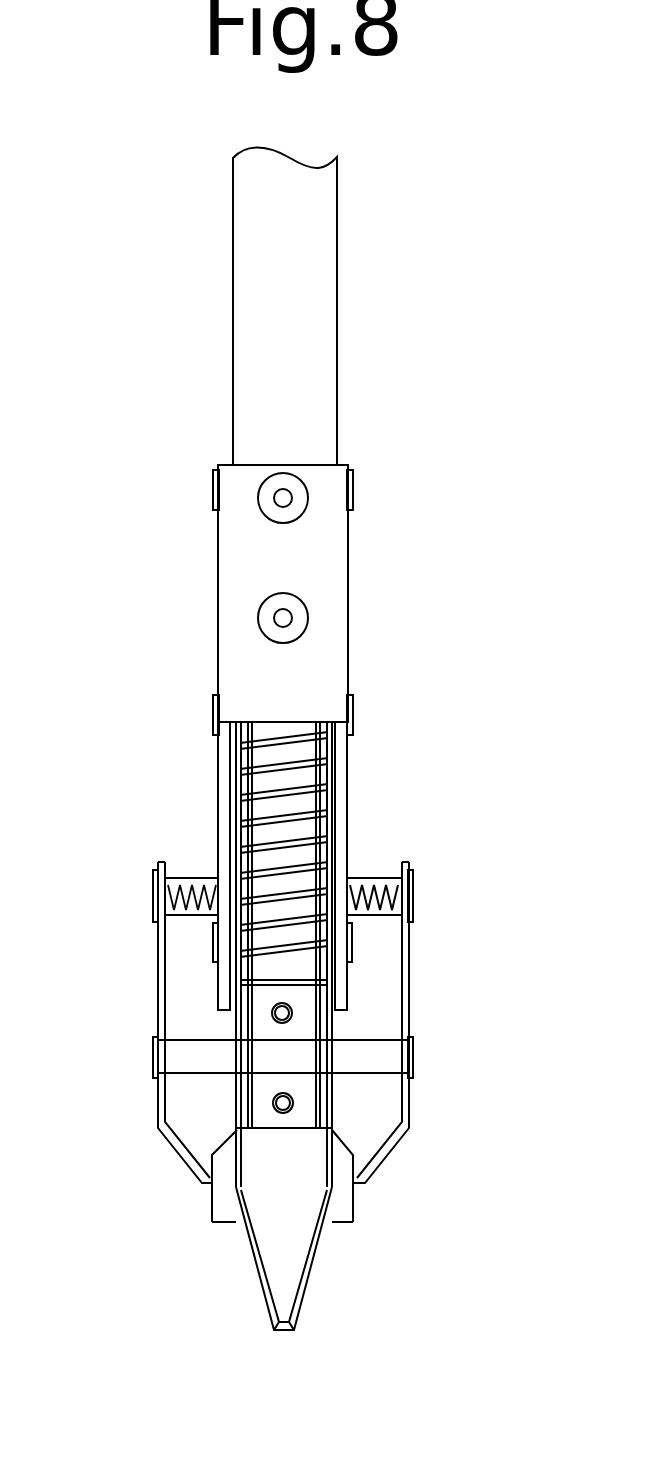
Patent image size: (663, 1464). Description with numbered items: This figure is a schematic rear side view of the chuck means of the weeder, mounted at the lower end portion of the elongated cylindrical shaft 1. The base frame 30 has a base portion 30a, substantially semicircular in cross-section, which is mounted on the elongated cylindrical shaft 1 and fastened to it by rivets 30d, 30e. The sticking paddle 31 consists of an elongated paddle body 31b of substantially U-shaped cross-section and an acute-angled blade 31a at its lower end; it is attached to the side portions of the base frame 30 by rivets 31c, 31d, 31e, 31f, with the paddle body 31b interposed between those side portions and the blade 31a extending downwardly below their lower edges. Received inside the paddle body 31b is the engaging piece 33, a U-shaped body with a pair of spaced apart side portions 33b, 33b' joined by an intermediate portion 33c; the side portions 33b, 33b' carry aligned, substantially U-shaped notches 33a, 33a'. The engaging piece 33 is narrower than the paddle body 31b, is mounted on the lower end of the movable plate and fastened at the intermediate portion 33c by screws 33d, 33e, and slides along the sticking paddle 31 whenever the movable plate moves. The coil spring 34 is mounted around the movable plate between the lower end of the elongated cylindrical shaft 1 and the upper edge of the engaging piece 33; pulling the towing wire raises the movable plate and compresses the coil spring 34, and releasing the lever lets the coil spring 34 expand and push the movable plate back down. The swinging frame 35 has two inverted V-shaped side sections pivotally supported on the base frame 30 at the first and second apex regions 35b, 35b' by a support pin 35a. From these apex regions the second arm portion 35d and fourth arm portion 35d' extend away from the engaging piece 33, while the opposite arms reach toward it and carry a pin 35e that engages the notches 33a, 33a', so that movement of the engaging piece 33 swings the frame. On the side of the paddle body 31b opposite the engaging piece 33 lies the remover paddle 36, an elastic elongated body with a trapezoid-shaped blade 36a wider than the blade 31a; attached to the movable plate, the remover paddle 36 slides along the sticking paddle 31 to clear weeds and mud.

The elongated cylindrical shaft 1 is at (340, 283).
The base frame 30 is at (212, 590).
The base portion 30a is at (338, 568).
The rivet 30d is at (293, 473).
The rivet 30e is at (300, 613).
The sticking paddle 31 is at (242, 1248).
The blade 31a is at (270, 1270).
The paddle body 31b is at (252, 763).
The rivet 31c is at (214, 492).
The rivet 31d is at (213, 710).
The rivet 31e is at (353, 493).
The rivet 31f is at (353, 707).
The engaging piece 33 is at (234, 1027).
The notch 33a is at (231, 1064).
The notch 33a' is at (367, 1050).
The side portion 33b is at (151, 1107).
The side portion 33b' is at (435, 867).
The intermediate portion 33c is at (300, 1115).
The screw 33d is at (273, 1008).
The screw 33e is at (283, 1114).
The coil spring 34 is at (300, 797).
The swinging frame 35 is at (152, 933).
The support pin 35a is at (195, 878).
The first apex region 35b is at (130, 864).
The second apex region 35b' is at (462, 871).
The second arm portion 35d is at (89, 915).
The fourth arm portion 35d' is at (469, 1022).
The pin 35e is at (392, 1063).
The remover paddle 36 is at (360, 1203).
The blade 36a is at (222, 1205).